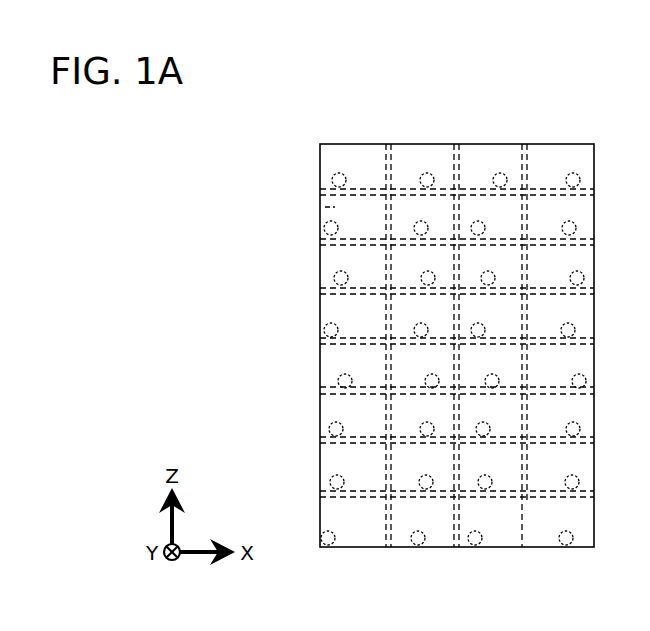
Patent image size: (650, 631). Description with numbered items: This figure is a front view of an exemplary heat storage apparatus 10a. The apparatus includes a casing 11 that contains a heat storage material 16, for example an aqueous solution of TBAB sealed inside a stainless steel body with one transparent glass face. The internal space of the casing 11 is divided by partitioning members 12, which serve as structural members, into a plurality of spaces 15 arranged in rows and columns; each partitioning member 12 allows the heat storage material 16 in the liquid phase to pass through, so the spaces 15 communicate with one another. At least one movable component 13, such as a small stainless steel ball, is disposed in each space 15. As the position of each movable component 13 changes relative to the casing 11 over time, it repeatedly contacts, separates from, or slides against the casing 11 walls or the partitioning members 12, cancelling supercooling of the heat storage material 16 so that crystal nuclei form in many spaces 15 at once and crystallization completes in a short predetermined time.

The heat storage apparatus 10a is at (300, 89).
The casing 11 is at (352, 144).
The partitioning member 12 is at (481, 183).
The movable component 13 is at (574, 172).
The space 15 is at (408, 168).
The heat storage material 16 is at (333, 206).